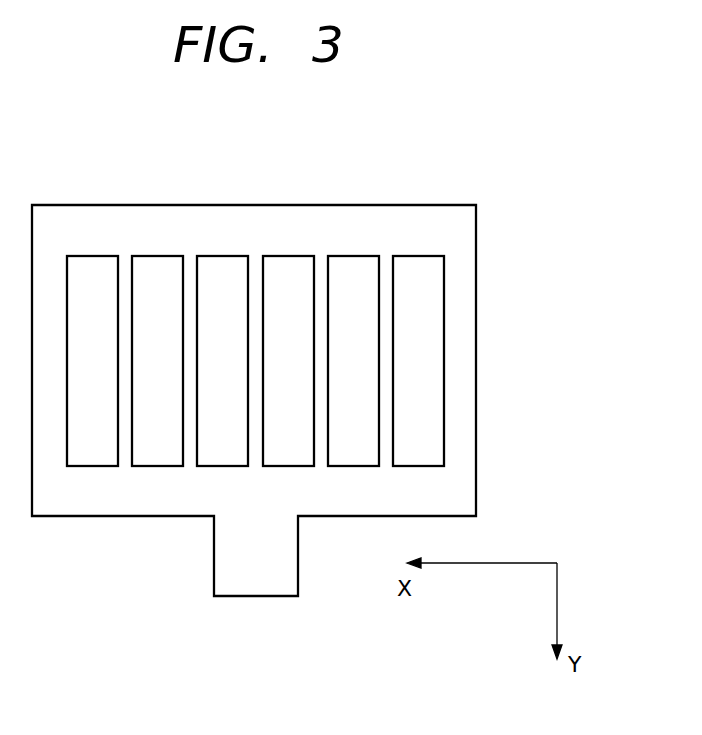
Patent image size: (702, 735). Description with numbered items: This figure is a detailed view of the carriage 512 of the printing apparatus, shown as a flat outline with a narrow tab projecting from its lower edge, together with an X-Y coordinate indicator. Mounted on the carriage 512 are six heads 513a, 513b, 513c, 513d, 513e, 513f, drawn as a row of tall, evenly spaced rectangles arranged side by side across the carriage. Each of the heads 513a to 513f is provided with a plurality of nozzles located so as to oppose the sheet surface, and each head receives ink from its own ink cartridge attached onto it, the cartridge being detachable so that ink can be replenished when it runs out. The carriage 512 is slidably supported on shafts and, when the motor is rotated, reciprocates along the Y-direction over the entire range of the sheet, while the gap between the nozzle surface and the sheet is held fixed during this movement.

The carriage 512 is at (475, 284).
The head 513a is at (92, 266).
The head 513b is at (159, 266).
The head 513c is at (222, 266).
The head 513d is at (287, 266).
The head 513e is at (351, 266).
The head 513f is at (423, 266).